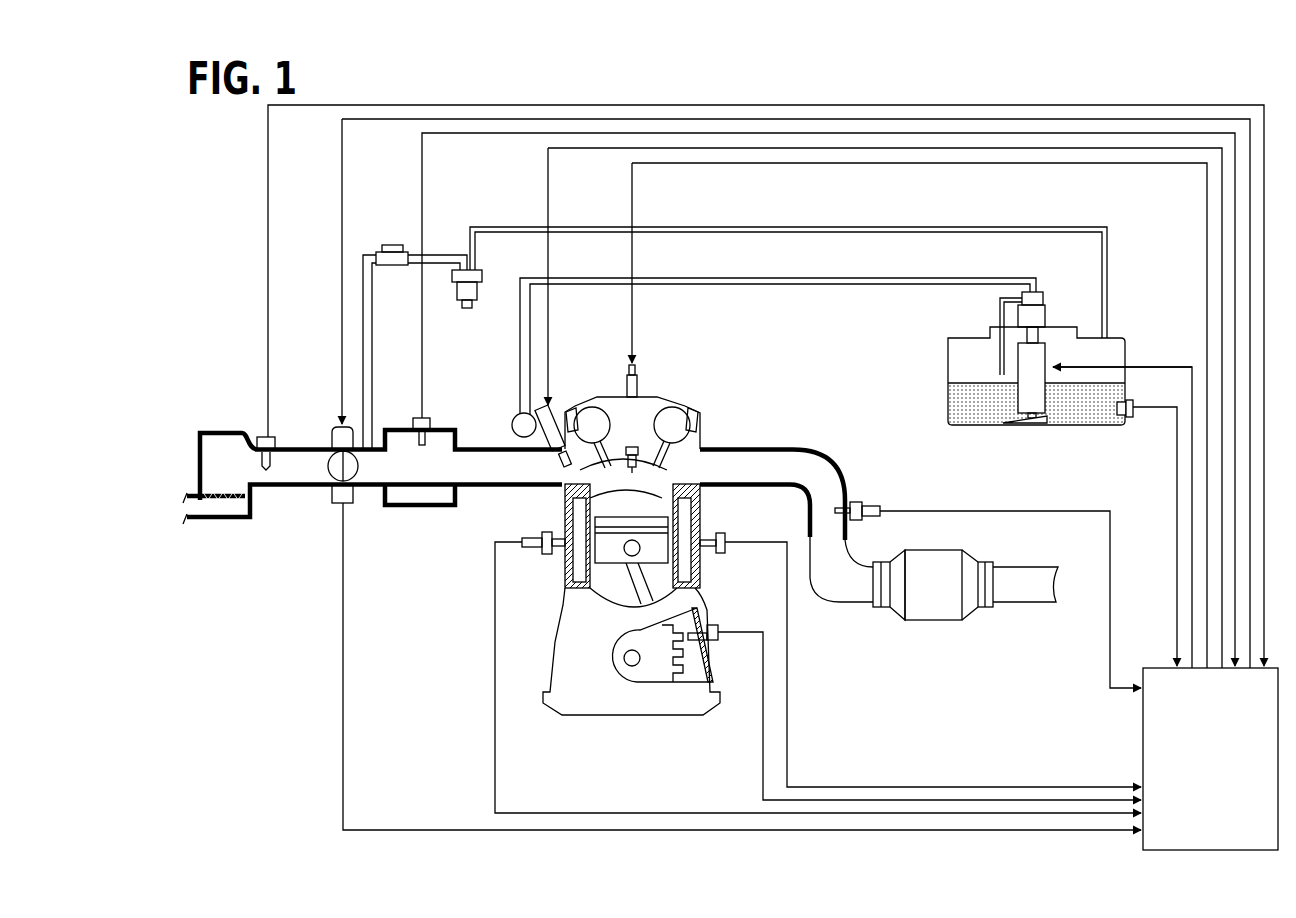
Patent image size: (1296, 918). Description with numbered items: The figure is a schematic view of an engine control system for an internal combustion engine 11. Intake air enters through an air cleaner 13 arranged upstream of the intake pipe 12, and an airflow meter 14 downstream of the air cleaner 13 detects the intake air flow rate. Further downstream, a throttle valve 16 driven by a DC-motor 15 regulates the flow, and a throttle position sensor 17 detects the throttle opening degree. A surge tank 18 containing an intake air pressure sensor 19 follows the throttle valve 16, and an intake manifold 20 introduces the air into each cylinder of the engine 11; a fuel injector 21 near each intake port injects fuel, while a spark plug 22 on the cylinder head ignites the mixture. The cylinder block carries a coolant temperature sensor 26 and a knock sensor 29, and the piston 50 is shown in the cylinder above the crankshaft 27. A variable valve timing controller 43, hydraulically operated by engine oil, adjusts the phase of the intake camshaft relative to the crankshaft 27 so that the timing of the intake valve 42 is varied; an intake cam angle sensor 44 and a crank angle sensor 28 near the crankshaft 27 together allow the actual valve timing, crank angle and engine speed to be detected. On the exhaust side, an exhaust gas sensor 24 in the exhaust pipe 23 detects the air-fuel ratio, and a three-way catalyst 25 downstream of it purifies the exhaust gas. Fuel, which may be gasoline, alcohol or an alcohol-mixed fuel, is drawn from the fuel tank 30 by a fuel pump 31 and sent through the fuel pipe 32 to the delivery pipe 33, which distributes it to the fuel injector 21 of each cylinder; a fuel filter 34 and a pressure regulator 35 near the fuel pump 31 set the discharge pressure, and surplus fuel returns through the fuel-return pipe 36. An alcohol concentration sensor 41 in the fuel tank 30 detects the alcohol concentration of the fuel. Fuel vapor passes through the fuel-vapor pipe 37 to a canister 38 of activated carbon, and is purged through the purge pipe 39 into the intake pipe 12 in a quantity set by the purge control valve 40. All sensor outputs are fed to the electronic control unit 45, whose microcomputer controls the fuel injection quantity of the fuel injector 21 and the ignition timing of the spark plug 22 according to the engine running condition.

The internal combustion engine 11 is at (682, 392).
The intake pipe 12 is at (300, 448).
The air cleaner 13 is at (222, 500).
The airflow meter 14 is at (260, 437).
The DC-motor 15 is at (331, 426).
The throttle valve 16 is at (330, 470).
The throttle position sensor 17 is at (352, 504).
The surge tank 18 is at (425, 507).
The intake air pressure sensor 19 is at (415, 418).
The intake manifold 20 is at (490, 447).
The fuel injector 21 is at (550, 405).
The spark plug 22 is at (640, 445).
The exhaust pipe 23 is at (794, 443).
The exhaust gas sensor 24 is at (862, 503).
The three-way catalyst 25 is at (945, 551).
The coolant temperature sensor 26 is at (545, 556).
The crankshaft 27 is at (634, 667).
The crank angle sensor 28 is at (718, 630).
The knock sensor 29 is at (726, 541).
The fuel tank 30 is at (968, 426).
The fuel pump 31 is at (1040, 424).
The fuel pipe 32 is at (821, 285).
The delivery pipe 33 is at (514, 419).
The fuel filter 34 is at (1046, 313).
The pressure regulator 35 is at (1044, 292).
The fuel-return pipe 36 is at (1000, 363).
The fuel-vapor pipe 37 is at (868, 227).
The canister 38 is at (480, 290).
The purge pipe 39 is at (445, 256).
The purge control valve 40 is at (392, 245).
The alcohol concentration sensor 41 is at (1127, 417).
The intake valve 42 is at (568, 494).
The variable valve timing controller 43 is at (604, 406).
The intake cam angle sensor 44 is at (562, 403).
The electronic control unit (ECU) 45 is at (1160, 667).
The piston 50 is at (680, 503).